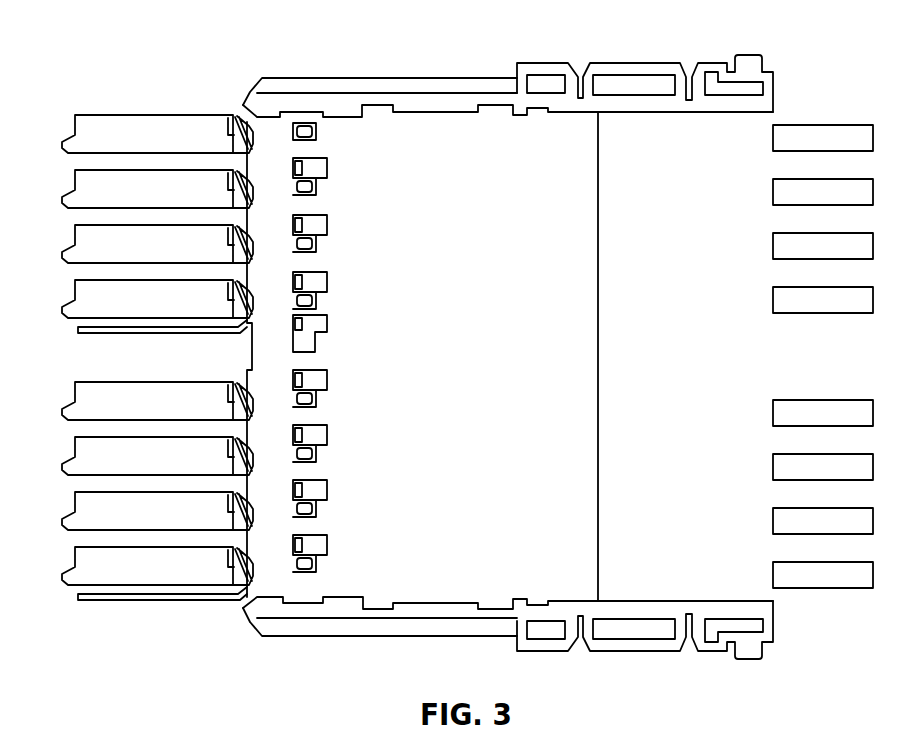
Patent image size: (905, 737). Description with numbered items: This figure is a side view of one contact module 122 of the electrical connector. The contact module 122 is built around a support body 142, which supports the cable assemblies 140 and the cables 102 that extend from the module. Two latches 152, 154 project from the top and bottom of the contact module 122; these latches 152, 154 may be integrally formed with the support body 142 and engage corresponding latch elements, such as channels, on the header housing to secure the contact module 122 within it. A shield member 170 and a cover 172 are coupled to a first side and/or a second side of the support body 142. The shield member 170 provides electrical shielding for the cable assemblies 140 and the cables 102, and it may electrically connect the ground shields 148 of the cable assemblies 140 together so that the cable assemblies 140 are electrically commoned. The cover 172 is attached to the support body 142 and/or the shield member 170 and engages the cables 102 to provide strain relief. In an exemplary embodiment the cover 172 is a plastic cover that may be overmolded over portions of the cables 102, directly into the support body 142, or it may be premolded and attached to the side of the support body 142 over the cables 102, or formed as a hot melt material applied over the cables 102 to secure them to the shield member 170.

The cables 102 is at (827, 133).
The contact module 122 is at (438, 68).
The cable assemblies 140 is at (137, 329).
The support body 142 is at (604, 70).
The ground shields 148 is at (175, 130).
The latch 152 is at (310, 88).
The latch 154 is at (298, 630).
The shield member 170 is at (443, 553).
The cover 172 is at (655, 575).